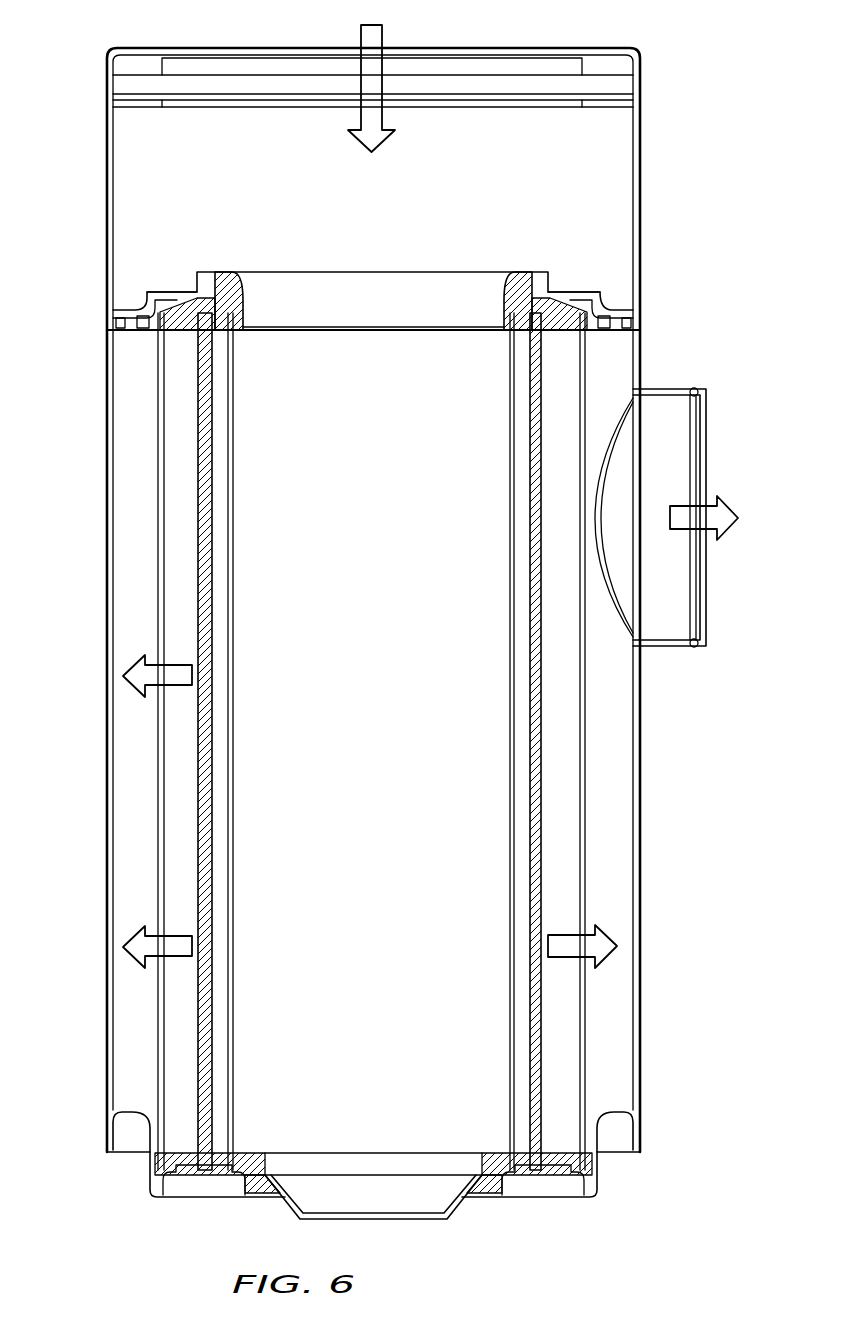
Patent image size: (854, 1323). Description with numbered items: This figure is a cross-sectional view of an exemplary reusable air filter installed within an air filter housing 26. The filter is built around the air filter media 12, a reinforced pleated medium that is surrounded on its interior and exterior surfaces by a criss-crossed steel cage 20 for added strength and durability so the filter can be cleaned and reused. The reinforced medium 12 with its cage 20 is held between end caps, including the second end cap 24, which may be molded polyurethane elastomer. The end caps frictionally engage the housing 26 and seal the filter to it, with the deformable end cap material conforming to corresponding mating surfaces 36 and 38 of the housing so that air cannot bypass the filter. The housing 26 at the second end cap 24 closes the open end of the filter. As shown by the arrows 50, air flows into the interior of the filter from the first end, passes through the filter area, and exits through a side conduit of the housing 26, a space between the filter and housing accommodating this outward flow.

The air filter media 12 is at (198, 392).
The cage 20 is at (232, 478).
The second end cap 24 is at (148, 1178).
The air filter housing 26 is at (108, 596).
The mating surface 36 is at (535, 300).
The mating surface 38 is at (585, 302).
The arrows 50 is at (358, 30).